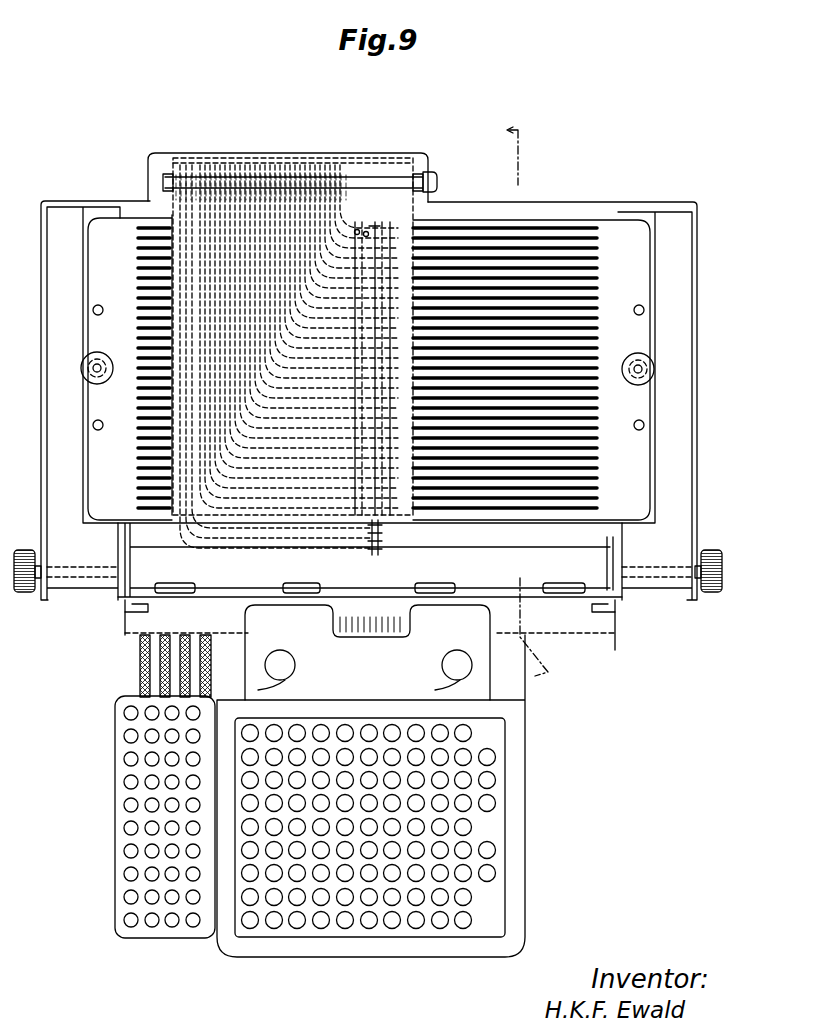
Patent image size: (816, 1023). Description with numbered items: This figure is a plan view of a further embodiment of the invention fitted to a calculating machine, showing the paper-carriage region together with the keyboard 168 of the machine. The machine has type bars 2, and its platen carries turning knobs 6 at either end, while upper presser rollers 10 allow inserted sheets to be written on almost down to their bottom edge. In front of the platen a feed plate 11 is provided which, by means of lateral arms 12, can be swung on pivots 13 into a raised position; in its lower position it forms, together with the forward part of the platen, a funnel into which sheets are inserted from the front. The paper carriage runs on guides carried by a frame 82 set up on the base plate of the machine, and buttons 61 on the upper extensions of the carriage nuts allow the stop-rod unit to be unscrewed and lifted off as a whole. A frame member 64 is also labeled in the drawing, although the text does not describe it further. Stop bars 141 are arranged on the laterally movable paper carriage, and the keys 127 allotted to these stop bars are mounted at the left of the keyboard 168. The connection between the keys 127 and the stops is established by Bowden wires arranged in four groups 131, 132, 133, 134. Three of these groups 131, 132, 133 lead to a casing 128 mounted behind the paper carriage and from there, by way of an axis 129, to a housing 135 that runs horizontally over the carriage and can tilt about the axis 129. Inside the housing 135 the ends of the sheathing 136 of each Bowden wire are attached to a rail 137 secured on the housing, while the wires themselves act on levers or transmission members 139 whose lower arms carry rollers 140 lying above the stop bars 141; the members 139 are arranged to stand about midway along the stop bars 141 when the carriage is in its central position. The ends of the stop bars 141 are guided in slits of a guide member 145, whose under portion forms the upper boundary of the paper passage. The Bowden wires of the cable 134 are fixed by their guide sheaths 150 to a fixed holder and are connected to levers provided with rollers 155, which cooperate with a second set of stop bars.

The type bars 2 is at (370, 627).
The turning knobs 6 is at (27, 550).
The upper presser rollers 10 is at (175, 583).
The feed plate 11 is at (135, 625).
The lateral arms 12 is at (122, 599).
The pivots 13 is at (531, 406).
The buttons 61 is at (106, 358).
The frame 64 is at (612, 205).
The frame 82 is at (156, 163).
The keys 127 is at (148, 850).
The casing 128 is at (184, 188).
The axis 129 is at (368, 232).
The Bowden wire group 131 is at (145, 679).
The Bowden wire group 132 is at (165, 666).
The Bowden wire group 133 is at (185, 660).
The cable 134 is at (211, 652).
The housing 135 is at (172, 215).
The sheathing 136 is at (355, 225).
The rail 137 is at (358, 230).
The transmission members 139 is at (396, 246).
The rollers 140 is at (374, 228).
The stop bars 141 is at (565, 270).
The guide member 145 is at (97, 280).
The guide sheaths 150 is at (200, 540).
The rollers 155 is at (380, 568).
The keyboard 168 is at (413, 823).